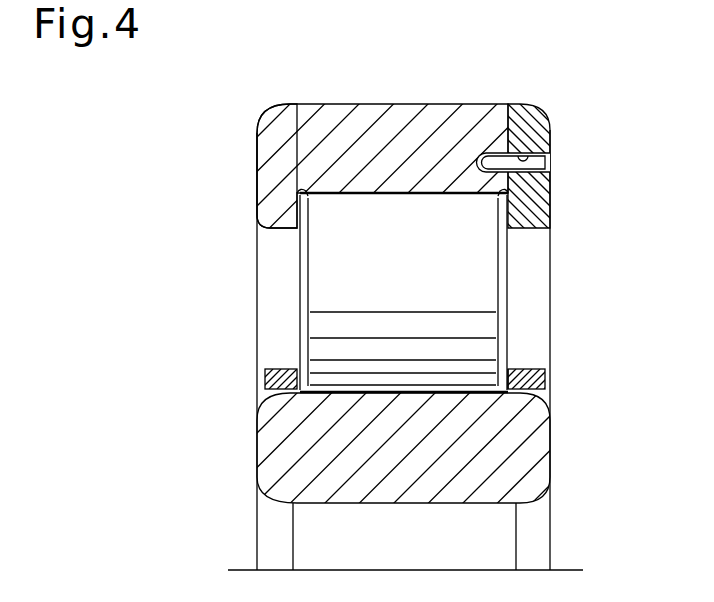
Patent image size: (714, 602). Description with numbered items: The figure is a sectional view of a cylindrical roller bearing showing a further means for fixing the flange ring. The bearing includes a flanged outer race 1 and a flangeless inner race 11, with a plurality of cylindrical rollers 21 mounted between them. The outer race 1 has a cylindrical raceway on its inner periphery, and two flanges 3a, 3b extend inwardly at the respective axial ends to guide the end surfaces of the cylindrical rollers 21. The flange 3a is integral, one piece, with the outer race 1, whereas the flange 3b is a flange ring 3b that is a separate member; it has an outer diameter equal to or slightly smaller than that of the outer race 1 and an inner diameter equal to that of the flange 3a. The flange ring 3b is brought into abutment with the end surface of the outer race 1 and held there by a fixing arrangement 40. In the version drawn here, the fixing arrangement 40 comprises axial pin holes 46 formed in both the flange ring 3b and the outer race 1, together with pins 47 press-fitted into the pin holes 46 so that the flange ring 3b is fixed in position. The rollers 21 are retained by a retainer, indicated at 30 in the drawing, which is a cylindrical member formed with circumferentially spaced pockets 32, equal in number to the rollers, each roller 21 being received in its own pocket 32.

The outer race 1 is at (303, 110).
The flange 3a is at (268, 184).
The flange ring 3b is at (543, 205).
The inner race 11 is at (265, 446).
The cylindrical rollers 21 is at (323, 266).
The cage 30 is at (546, 385).
The pockets 32 is at (508, 364).
The fixing arrangement 40 is at (561, 99).
The axial pin holes 46 is at (535, 152).
The pins 47 is at (495, 155).